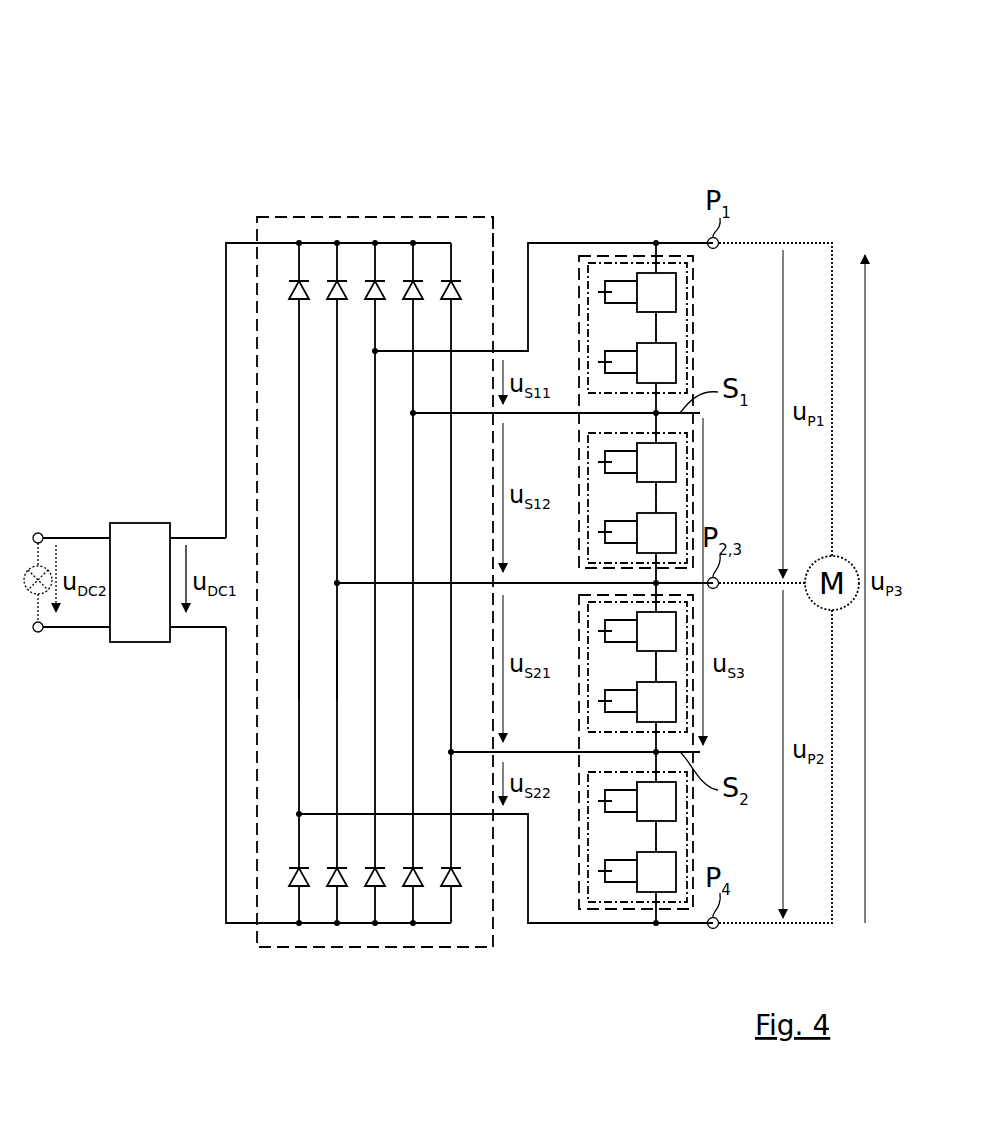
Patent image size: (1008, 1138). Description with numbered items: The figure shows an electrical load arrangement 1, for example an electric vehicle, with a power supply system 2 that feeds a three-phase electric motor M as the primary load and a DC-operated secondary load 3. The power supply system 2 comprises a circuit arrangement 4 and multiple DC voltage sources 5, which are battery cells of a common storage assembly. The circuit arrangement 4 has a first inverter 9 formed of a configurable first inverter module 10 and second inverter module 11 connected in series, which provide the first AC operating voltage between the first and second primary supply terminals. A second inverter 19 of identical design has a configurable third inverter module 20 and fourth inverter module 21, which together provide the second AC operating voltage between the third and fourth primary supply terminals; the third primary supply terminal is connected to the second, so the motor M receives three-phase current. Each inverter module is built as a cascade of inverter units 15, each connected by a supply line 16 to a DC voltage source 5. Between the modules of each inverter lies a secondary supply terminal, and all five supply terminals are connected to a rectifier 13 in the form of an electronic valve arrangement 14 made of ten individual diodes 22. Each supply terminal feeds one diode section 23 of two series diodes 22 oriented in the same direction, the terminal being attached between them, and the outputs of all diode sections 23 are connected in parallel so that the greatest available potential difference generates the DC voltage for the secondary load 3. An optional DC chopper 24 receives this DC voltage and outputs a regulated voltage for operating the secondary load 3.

The electrical load arrangement 1 is at (132, 90).
The power supply system 2 is at (329, 498).
The secondary load 3 is at (44, 535).
The circuit arrangement 4 is at (290, 130).
The DC voltage source 5 is at (598, 297).
The first inverter 9 is at (586, 460).
The first inverter module 10 is at (693, 320).
The second inverter module 11 is at (586, 525).
The rectifier 13 is at (372, 217).
The electronic valve arrangement 14 is at (468, 247).
The inverter unit 15 is at (693, 283).
The supply line 16 is at (622, 282).
The second inverter 19 is at (586, 632).
The third inverter module 20 is at (586, 705).
The fourth inverter module 21 is at (693, 838).
The diode 22 is at (337, 300).
The diode section 23 is at (337, 640).
The DC chopper 24 is at (140, 582).